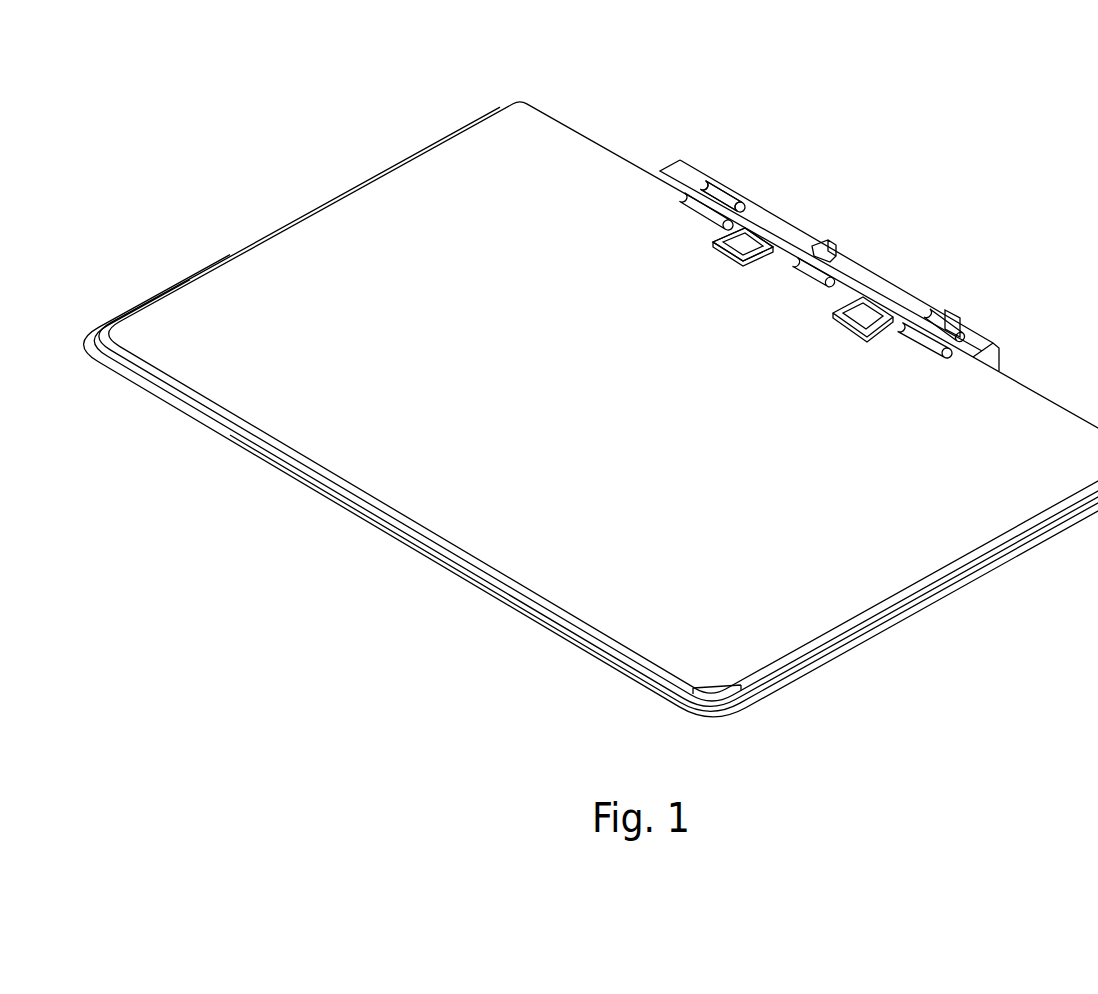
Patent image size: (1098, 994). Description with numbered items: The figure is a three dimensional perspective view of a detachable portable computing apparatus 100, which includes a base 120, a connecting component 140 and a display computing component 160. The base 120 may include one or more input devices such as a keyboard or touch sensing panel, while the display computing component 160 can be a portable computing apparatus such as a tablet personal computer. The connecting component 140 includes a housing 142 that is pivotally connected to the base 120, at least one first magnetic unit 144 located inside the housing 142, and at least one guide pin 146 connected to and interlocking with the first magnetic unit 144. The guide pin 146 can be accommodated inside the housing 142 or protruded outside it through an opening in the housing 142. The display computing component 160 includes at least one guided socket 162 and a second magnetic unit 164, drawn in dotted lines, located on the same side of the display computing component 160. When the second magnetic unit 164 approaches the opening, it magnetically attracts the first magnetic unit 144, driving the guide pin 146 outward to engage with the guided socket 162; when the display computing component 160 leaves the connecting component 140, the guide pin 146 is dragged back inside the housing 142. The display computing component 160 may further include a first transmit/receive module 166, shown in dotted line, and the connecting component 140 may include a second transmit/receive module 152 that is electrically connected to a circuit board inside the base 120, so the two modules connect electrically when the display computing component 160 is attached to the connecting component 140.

The detachable portable computing apparatus 100 is at (1094, 66).
The base 120 is at (913, 602).
The connecting component 140 is at (879, 191).
The housing 142 is at (808, 246).
The first magnetic unit 144 is at (720, 184).
The guide pin 146 is at (750, 241).
The second transmit/receive module 152 is at (878, 269).
The display computing component 160 is at (517, 109).
The guided socket 162 is at (742, 262).
The second magnetic unit 164 is at (950, 324).
The first transmit/receive module 166 is at (834, 257).